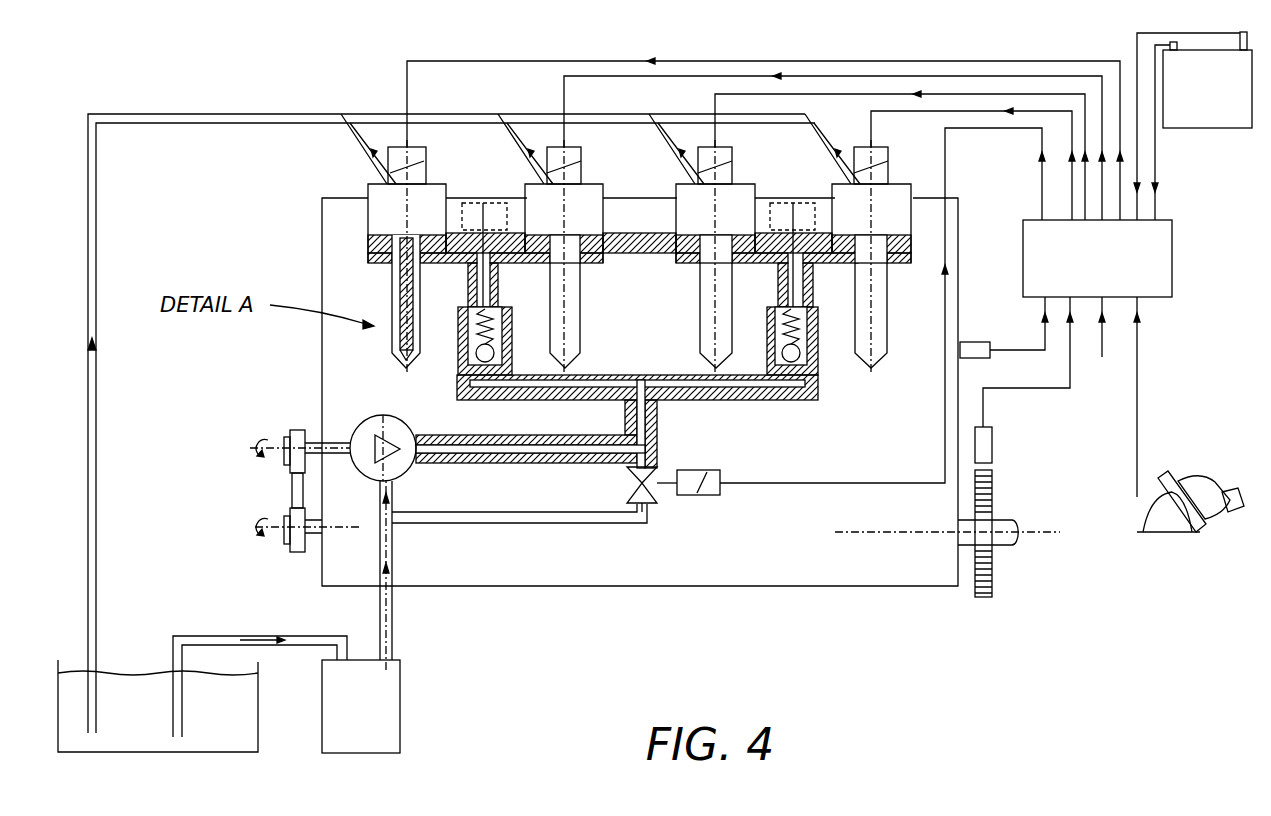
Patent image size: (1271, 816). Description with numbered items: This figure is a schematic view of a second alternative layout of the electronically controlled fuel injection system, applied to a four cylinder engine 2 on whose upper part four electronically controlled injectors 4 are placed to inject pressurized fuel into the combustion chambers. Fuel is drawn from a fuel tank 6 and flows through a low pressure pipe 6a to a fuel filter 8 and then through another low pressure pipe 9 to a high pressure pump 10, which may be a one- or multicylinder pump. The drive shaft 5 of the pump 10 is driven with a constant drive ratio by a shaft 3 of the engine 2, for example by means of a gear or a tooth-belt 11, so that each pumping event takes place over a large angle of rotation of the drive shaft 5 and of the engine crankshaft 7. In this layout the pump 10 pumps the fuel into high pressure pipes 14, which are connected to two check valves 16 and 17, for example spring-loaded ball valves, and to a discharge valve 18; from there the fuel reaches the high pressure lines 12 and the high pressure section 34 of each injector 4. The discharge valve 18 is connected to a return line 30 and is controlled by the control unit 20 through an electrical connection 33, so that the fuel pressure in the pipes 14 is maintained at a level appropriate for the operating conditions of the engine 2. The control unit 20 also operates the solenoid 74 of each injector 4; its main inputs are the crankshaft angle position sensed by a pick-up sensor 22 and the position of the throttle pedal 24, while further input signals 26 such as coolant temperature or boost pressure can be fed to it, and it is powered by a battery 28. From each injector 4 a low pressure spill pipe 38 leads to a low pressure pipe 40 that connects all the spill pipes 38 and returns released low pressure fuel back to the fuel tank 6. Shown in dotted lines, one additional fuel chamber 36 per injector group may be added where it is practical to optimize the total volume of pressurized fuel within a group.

The engine 2 is at (338, 358).
The shaft of the engine 3 is at (312, 553).
The electronically controlled injector 4 is at (370, 268).
The drive shaft of pump 5 is at (312, 432).
The fuel tank 6 is at (138, 683).
The low pressure pipe 6a is at (258, 636).
The engine crankshaft 7 is at (970, 548).
The fuel filter 8 is at (392, 712).
The low pressure pipe 9 is at (392, 650).
The high pressure pump 10 is at (375, 425).
The gear or tooth-belt 11 is at (290, 492).
The high pressure line 12 is at (462, 264).
The high pressure pipe 14 is at (630, 413).
The check valve 16 is at (458, 352).
The check valve 17 is at (820, 365).
The discharge valve 18 is at (655, 497).
The control unit 20 is at (1170, 277).
The pick-up sensor 22 is at (992, 440).
The throttle pedal 24 is at (1147, 512).
The further input signals 26 is at (1017, 350).
The battery 28 is at (1213, 128).
The return line 30 is at (552, 523).
The electrical connection 33 is at (833, 487).
The high pressure section of injector 34 is at (368, 262).
The fuel chamber 36 is at (483, 203).
The low pressure spill pipe 38 is at (343, 130).
The low pressure pipe 40 is at (262, 116).
The solenoid 74 is at (426, 170).